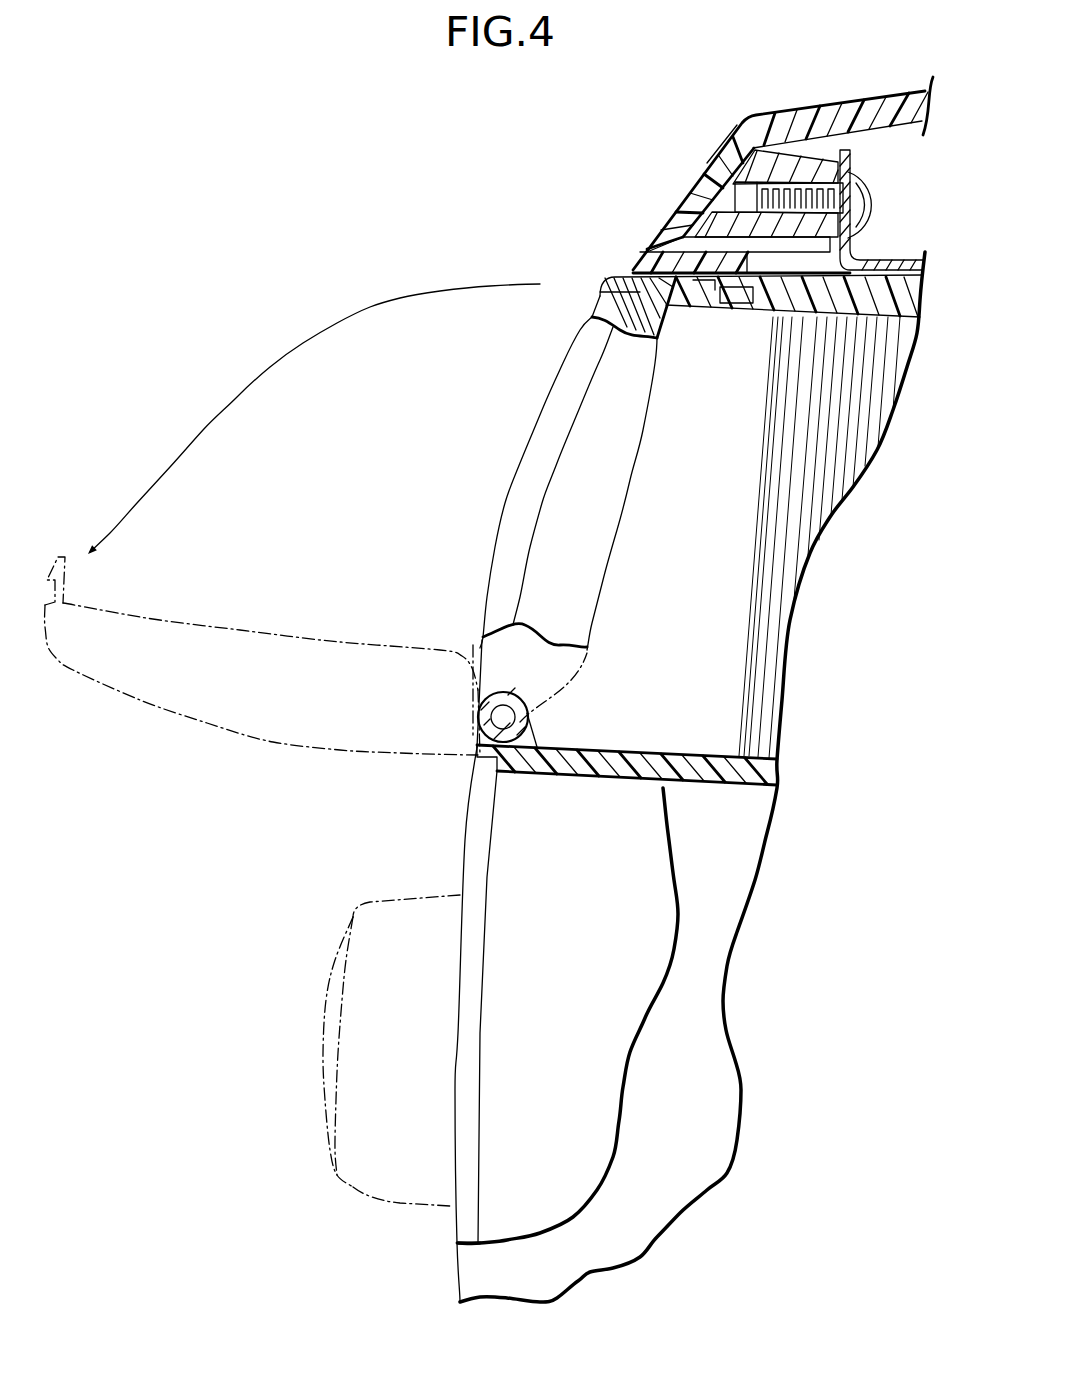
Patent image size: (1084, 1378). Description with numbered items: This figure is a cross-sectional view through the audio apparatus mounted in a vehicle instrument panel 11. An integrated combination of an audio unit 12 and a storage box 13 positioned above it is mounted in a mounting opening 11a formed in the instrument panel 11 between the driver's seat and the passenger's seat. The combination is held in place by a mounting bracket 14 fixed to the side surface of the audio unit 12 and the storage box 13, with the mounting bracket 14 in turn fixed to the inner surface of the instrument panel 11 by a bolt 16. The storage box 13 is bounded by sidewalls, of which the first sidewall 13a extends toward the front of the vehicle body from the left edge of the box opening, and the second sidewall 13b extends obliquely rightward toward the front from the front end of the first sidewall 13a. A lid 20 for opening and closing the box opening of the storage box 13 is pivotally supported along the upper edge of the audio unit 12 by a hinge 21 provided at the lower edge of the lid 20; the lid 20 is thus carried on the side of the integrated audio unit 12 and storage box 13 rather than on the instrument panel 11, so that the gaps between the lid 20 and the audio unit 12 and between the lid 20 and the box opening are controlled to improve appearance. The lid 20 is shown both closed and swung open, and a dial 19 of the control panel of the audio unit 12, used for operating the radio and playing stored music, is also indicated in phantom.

The instrument panel 11 is at (735, 172).
The mounting opening 11a is at (633, 268).
The audio unit 12 is at (452, 836).
The storage box 13 is at (643, 777).
The first sidewall 13a is at (700, 737).
The second sidewall 13b is at (793, 553).
The mounting bracket 14 is at (867, 262).
The bolt 16 is at (868, 193).
The dial 19 is at (330, 985).
The lid 20 is at (536, 410).
The hinge 21 is at (542, 712).